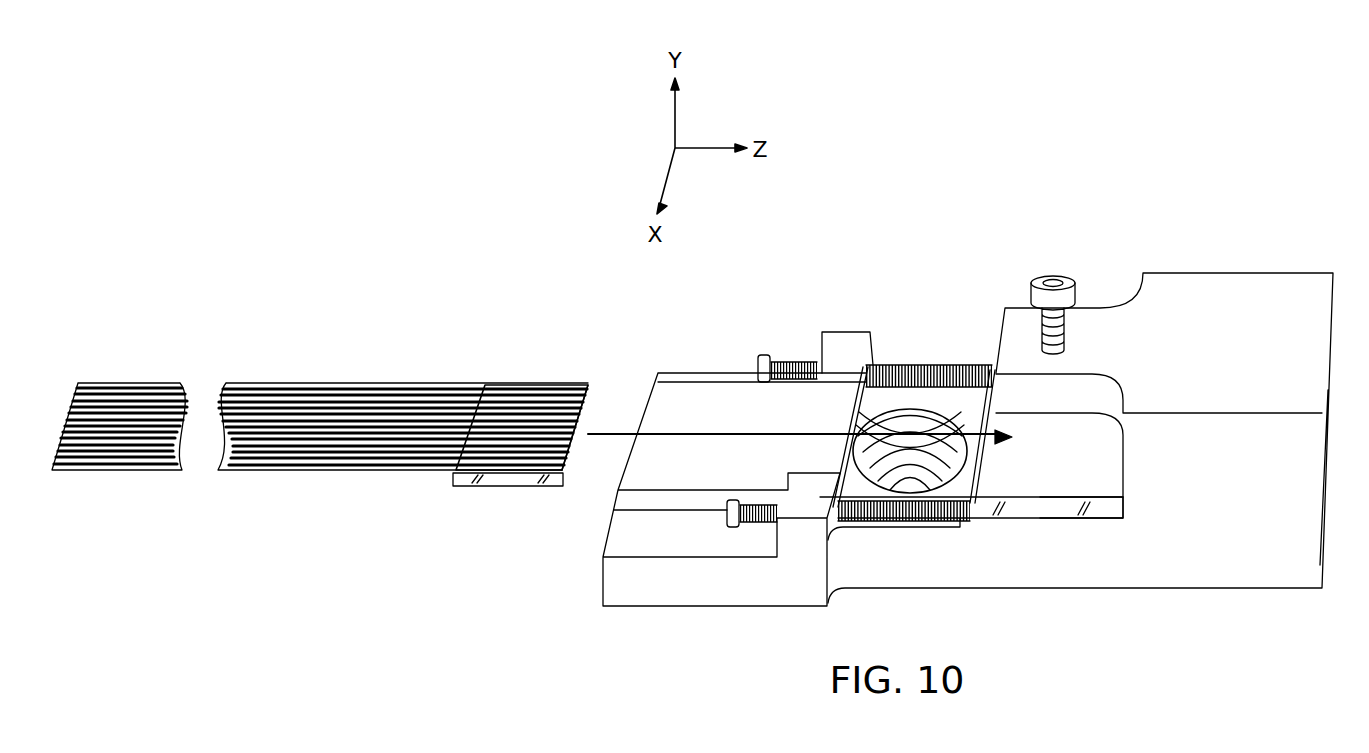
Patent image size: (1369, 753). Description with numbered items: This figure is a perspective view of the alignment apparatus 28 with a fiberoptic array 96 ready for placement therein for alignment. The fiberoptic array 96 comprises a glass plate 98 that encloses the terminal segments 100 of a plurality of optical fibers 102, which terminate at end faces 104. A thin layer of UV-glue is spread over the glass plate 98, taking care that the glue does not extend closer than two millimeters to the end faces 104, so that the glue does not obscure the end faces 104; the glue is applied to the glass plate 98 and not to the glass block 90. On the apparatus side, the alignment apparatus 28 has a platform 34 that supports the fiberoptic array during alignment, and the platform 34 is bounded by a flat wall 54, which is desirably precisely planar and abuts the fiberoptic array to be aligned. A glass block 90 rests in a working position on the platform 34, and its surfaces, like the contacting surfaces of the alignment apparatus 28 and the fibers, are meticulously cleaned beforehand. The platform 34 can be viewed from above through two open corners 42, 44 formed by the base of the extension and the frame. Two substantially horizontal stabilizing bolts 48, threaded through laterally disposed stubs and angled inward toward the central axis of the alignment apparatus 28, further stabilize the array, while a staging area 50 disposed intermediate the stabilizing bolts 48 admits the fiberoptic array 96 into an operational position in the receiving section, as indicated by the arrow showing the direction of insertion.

The alignment apparatus 28 is at (1281, 212).
The platform 34 is at (1012, 520).
The open corner 42 is at (1140, 277).
The open corner 44 is at (1110, 393).
The stabilizing bolt 48 is at (795, 360).
The staging area 50 is at (641, 400).
The flat wall 54 is at (1125, 462).
The glass block 90 is at (1102, 514).
The fiberoptic array 96 is at (331, 451).
The glass plate 98 is at (523, 383).
The terminal segments 100 is at (567, 485).
The optical fibers 102 is at (327, 385).
The end faces 104 is at (580, 395).